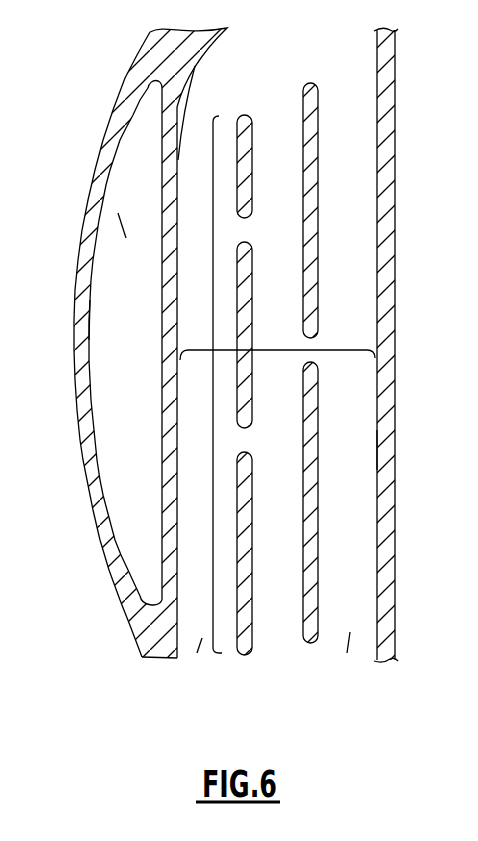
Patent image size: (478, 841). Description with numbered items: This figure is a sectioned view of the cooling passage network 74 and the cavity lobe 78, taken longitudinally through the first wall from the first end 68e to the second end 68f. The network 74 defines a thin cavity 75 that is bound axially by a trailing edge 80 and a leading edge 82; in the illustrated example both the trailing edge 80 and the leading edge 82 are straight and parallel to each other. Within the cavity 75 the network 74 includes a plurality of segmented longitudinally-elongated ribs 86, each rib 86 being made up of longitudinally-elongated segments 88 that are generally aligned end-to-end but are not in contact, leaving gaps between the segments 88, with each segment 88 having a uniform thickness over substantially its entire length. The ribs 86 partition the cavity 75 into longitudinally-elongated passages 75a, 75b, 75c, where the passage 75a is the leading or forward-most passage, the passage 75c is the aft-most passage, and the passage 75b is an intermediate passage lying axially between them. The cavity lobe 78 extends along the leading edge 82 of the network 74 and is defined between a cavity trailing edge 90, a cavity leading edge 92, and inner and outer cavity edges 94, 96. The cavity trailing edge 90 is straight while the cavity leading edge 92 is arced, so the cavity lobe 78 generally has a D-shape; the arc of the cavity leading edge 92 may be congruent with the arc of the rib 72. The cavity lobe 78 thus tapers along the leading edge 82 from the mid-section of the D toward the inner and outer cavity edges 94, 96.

The first end 68e is at (144, 657).
The second end 68f is at (149, 34).
The rib 72 is at (80, 368).
The network 74 is at (353, 544).
The thin cavity 75 is at (278, 350).
The leading passage 75a is at (200, 642).
The intermediate passage 75b is at (273, 643).
The aft passage 75c is at (349, 637).
The cavity lobe 78 is at (126, 238).
The trailing edge 80 is at (378, 447).
The leading edge 82 is at (188, 125).
The segmented longitudinally-elongated rib 86 is at (213, 394).
The longitudinally-elongated segment 88 is at (254, 172).
The cavity trailing edge 90 is at (190, 160).
The cavity leading edge 92 is at (88, 324).
The inner cavity edge 94 is at (132, 587).
The outer cavity edge 96 is at (146, 86).